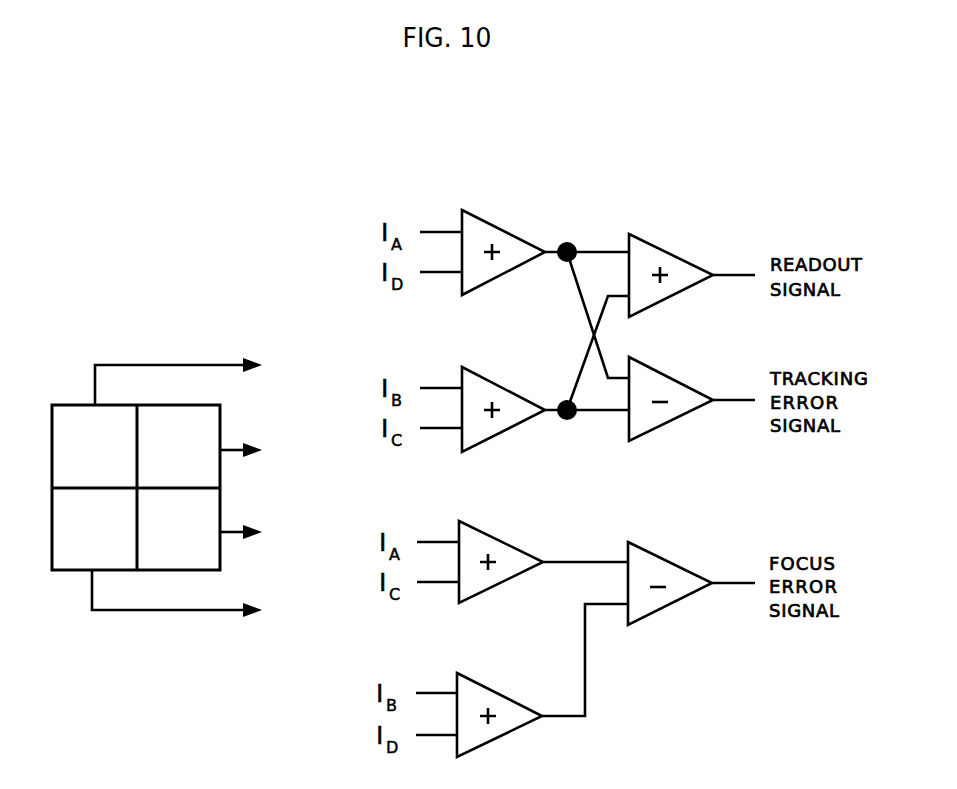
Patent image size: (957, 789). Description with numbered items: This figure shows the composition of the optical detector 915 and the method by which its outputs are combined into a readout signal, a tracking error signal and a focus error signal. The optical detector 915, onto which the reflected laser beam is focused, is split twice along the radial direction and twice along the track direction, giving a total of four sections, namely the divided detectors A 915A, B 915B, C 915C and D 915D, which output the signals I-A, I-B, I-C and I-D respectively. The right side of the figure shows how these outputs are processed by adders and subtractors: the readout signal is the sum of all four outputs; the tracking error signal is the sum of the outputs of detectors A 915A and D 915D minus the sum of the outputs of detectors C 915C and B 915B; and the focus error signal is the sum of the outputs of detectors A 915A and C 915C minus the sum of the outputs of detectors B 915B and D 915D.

The optical detector 915 is at (158, 405).
The light receiving region A of photodetector 915A is at (178, 446).
The light receiving region B of photodetector 915B is at (94, 446).
The light receiving region C of photodetector 915C is at (94, 529).
The light receiving region D of photodetector 915D is at (178, 529).